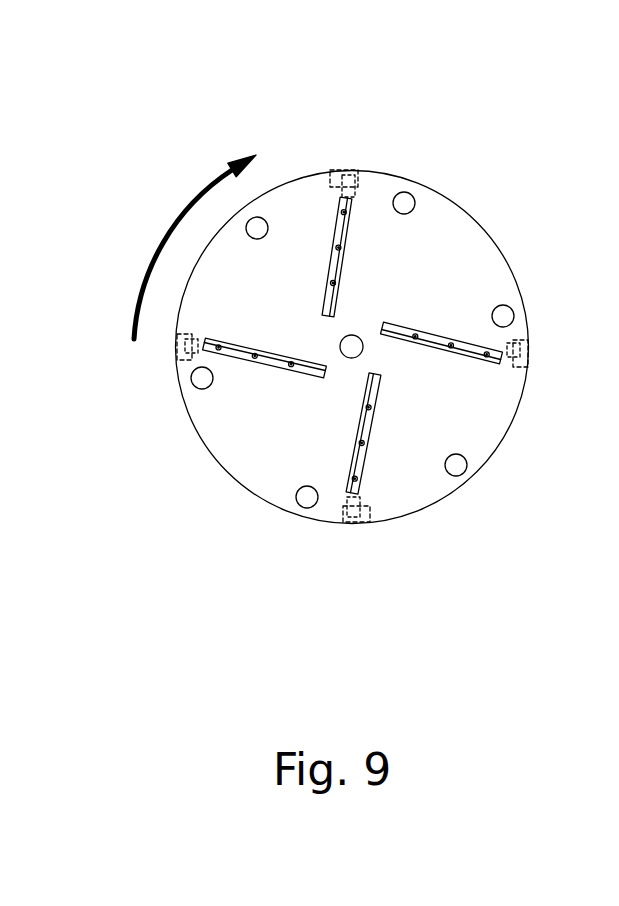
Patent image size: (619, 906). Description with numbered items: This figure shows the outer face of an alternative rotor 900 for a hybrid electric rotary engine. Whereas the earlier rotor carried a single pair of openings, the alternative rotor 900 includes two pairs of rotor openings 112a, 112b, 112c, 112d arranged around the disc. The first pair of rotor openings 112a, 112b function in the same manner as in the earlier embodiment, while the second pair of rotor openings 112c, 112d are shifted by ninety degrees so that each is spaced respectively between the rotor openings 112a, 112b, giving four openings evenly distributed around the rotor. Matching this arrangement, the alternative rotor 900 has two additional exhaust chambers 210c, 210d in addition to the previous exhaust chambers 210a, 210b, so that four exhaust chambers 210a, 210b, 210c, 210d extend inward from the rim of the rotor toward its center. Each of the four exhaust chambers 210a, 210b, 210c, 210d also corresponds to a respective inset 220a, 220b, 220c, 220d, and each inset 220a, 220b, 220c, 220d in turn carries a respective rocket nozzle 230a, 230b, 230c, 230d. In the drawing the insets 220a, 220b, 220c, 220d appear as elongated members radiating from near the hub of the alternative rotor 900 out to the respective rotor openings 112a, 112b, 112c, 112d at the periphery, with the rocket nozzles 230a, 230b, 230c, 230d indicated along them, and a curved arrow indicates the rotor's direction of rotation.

The alternative rotor 900 is at (394, 78).
The rotor opening 112a is at (178, 364).
The rotor opening 112b is at (528, 337).
The rotor opening 112c is at (330, 172).
The rotor opening 112d is at (372, 520).
The exhaust chamber 210a is at (198, 337).
The exhaust chamber 210b is at (514, 367).
The exhaust chamber 210c is at (358, 190).
The exhaust chamber 210d is at (345, 502).
The inset 220a is at (267, 365).
The inset 220b is at (450, 338).
The inset 220c is at (335, 228).
The inset 220d is at (366, 452).
The rocket nozzle 230a is at (298, 353).
The rocket nozzle 230b is at (488, 370).
The rocket nozzle 230c is at (358, 210).
The rocket nozzle 230d is at (340, 487).